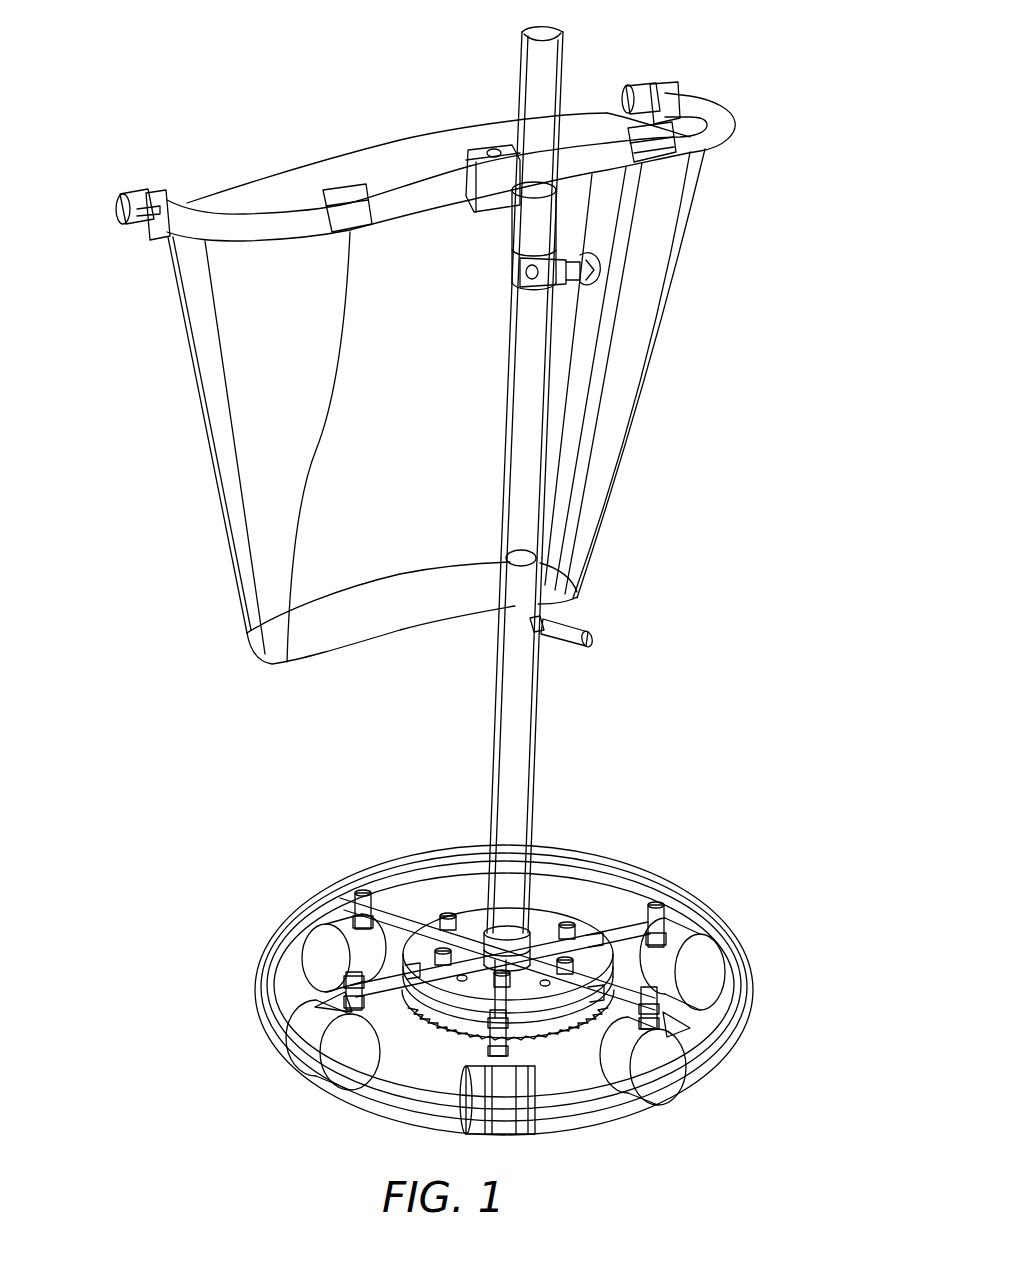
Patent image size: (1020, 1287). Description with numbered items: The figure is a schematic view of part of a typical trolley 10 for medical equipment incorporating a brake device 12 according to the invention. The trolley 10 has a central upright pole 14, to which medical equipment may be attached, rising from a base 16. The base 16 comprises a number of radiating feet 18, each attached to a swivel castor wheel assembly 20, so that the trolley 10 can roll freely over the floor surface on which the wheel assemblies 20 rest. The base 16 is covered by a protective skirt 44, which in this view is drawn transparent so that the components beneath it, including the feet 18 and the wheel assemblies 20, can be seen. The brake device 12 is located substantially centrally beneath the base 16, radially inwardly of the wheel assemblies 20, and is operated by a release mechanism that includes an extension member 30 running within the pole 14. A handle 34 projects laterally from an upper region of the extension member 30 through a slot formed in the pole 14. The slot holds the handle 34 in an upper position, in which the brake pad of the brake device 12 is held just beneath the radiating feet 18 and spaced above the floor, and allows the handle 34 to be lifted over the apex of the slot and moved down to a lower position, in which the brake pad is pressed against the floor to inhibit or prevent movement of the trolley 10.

The trolley 10 is at (234, 90).
The brake device 12 is at (550, 910).
The central upright pole 14 is at (518, 394).
The base 16 is at (300, 868).
The radiating feet 18 is at (405, 915).
The swivel castor wheel assembly 20 is at (347, 1072).
The extension member 30 is at (508, 728).
The handle 34 is at (598, 636).
The protective skirt 44 is at (288, 975).